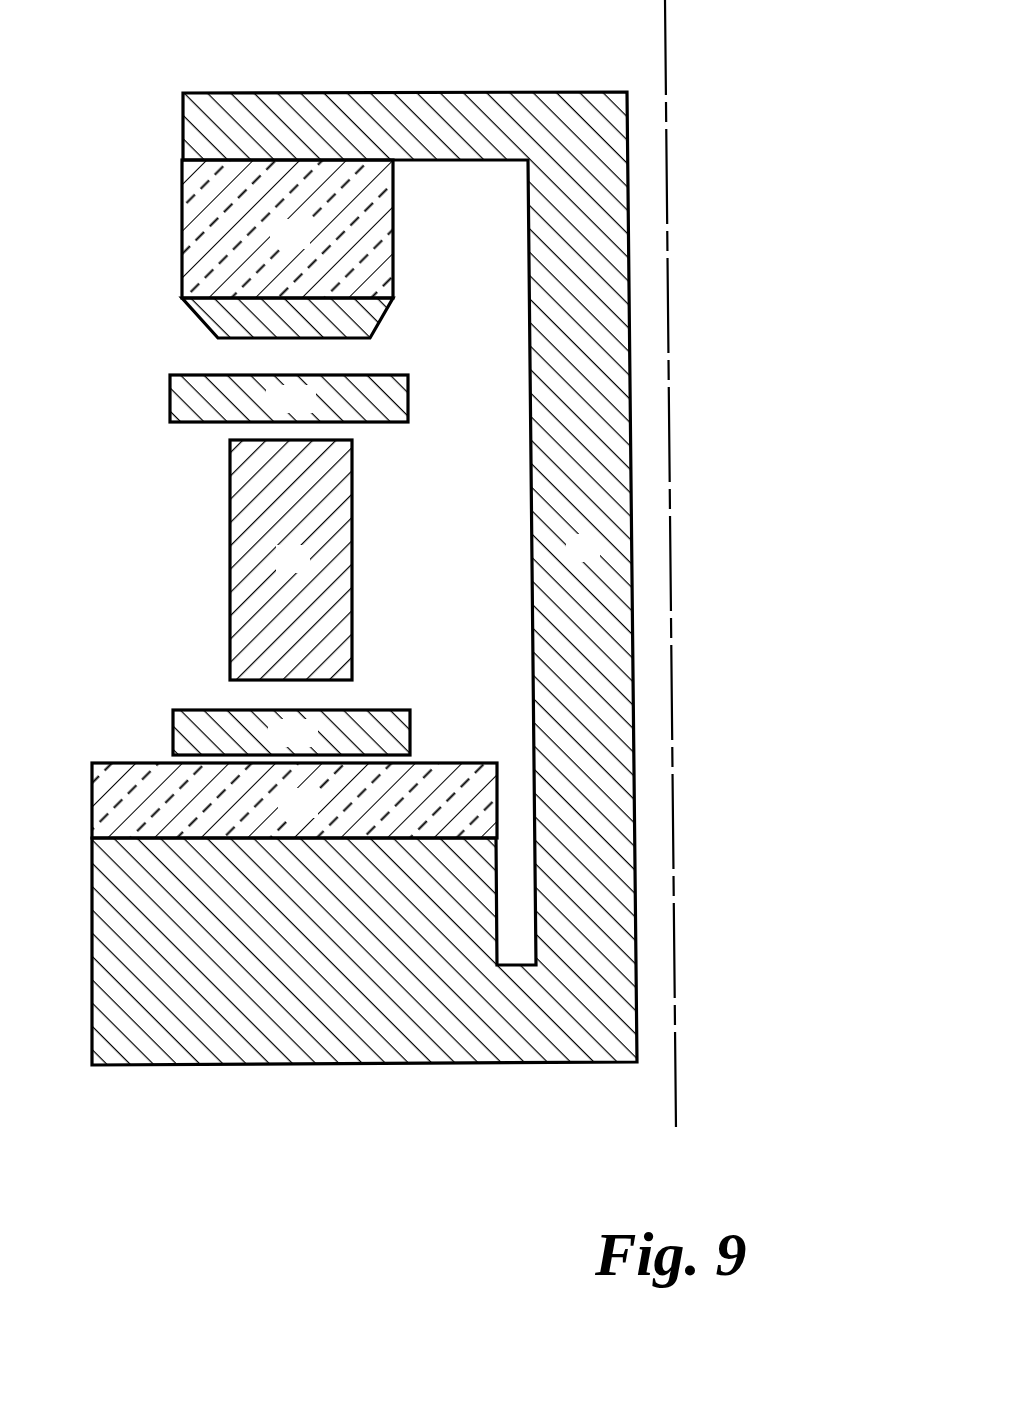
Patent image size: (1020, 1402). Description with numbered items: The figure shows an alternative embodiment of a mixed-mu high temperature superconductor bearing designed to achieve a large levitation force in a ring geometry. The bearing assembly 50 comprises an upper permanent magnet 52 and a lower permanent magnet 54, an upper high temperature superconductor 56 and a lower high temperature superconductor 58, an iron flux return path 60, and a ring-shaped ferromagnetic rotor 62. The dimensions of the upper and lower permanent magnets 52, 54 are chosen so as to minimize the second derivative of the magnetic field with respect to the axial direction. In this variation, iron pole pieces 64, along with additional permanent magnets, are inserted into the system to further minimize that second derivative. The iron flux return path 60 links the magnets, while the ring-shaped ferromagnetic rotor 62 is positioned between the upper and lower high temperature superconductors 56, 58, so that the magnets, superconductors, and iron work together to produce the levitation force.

The bearing assembly 50 is at (171, 77).
The upper permanent magnet 52 is at (183, 230).
The lower permanent magnet 54 is at (92, 800).
The upper high temperature superconductor 56 is at (170, 397).
The lower high temperature superconductor 58 is at (173, 732).
The iron flux return path 60 is at (567, 91).
The ring-shaped ferromagnetic rotor 62 is at (230, 558).
The iron pole pieces 64 is at (198, 318).